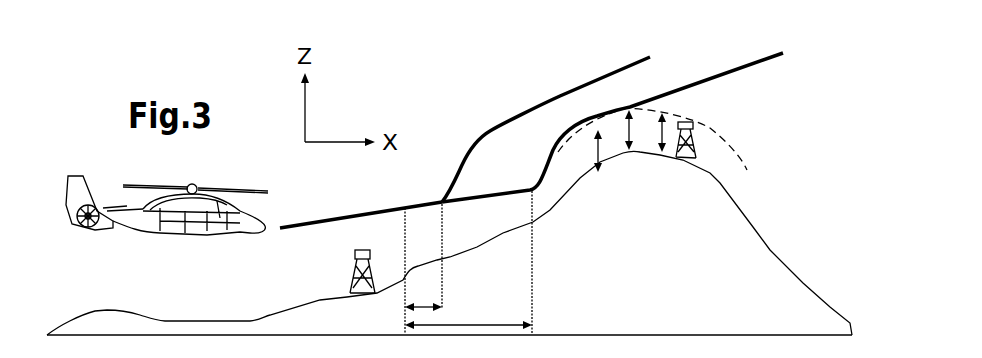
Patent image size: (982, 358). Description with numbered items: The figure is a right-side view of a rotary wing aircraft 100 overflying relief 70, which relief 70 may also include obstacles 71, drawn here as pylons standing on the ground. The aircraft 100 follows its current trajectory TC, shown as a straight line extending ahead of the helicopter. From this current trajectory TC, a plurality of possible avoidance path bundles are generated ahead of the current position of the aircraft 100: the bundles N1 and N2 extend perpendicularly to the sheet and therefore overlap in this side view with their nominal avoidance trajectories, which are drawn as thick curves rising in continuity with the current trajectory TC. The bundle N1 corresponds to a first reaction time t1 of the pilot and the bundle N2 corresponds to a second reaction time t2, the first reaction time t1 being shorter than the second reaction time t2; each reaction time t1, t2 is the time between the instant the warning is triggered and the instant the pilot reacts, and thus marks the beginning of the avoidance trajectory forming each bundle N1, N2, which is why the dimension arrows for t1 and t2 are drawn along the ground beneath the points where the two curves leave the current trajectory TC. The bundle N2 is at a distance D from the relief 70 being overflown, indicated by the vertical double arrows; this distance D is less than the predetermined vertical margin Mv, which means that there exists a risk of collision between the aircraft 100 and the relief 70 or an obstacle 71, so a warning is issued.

The aircraft 100 is at (138, 222).
The relief 70 is at (517, 234).
The obstacles 71 is at (355, 255).
The current trajectory TC is at (360, 216).
The first avoidance path bundle N1 is at (501, 124).
The second avoidance path bundle N2 is at (739, 70).
The vertical margin Mv is at (596, 148).
The distance D is at (627, 124).
The first reaction time t1 is at (423, 268).
The second reaction time t2 is at (468, 262).